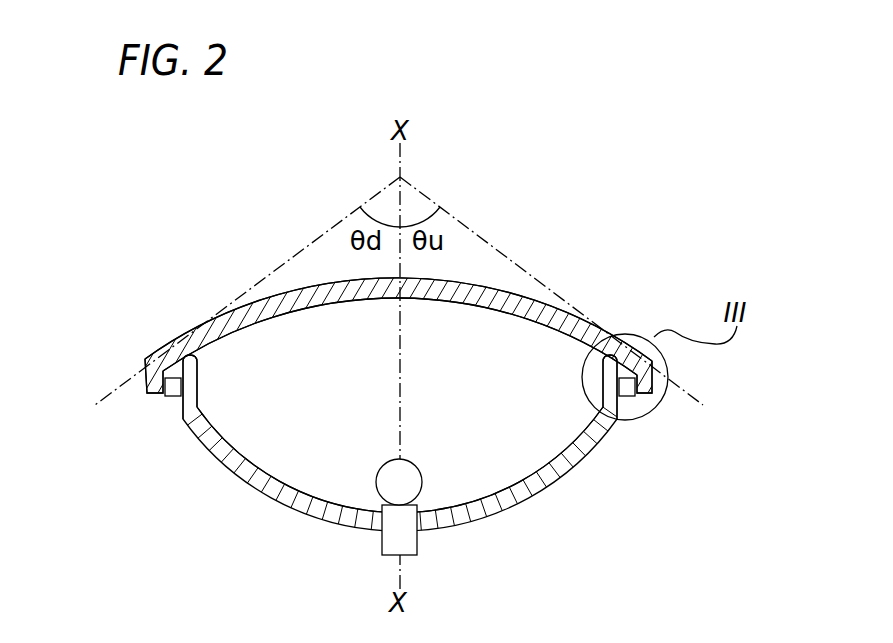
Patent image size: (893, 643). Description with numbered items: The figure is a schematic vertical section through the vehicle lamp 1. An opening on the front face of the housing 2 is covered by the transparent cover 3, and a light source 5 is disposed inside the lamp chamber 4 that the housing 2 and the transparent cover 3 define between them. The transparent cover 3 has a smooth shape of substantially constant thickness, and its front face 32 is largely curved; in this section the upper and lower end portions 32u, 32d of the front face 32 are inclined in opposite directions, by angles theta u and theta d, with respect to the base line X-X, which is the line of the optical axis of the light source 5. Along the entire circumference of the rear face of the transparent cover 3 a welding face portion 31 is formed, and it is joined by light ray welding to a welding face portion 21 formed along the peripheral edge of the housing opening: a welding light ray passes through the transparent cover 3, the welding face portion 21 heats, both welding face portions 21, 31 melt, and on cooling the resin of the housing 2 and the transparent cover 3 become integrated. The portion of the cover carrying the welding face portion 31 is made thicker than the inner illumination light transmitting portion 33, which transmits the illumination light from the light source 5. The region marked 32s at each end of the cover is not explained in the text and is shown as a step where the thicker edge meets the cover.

The lamp 1 is at (266, 214).
The housing 2 is at (273, 507).
The welding face portion 21 is at (200, 365).
The transparent cover 3 is at (512, 298).
The welding face portion 31 is at (178, 412).
The front face 32 is at (480, 287).
The lower end portion 32d is at (150, 352).
The upper end portion 32u is at (640, 337).
The step portion 32s is at (138, 388).
The illumination light transmitting portion 33 is at (460, 307).
The lamp chamber 4 is at (288, 370).
The light source 5 is at (423, 477).